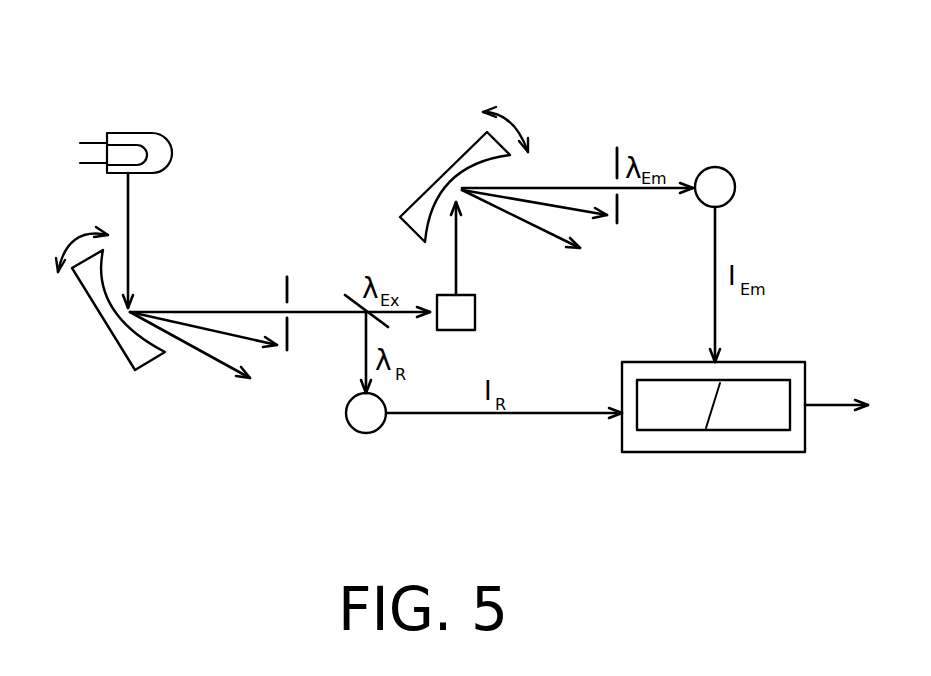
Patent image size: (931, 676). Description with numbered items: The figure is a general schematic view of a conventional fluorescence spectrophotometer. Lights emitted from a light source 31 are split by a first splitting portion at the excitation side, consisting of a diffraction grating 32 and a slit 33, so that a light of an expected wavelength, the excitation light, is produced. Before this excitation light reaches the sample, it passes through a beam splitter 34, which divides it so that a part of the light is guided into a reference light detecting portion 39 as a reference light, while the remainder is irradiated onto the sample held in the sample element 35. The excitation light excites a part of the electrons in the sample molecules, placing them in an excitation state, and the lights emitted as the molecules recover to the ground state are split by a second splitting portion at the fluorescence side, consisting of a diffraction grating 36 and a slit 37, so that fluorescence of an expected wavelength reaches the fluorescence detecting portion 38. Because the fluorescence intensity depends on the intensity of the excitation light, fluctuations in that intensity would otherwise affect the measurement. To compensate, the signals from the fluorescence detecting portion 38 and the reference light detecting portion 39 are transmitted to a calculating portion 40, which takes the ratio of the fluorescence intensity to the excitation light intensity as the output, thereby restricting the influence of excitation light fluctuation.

The light source 31 is at (127, 132).
The diffraction grating 32 is at (120, 348).
The slit 33 is at (287, 277).
The beam splitter 34 is at (352, 296).
The sample element 35 is at (475, 323).
The diffraction grating 36 is at (443, 175).
The slit 37 is at (617, 148).
The fluorescence detecting portion 38 is at (715, 167).
The reference light detecting portion 39 is at (366, 433).
The calculating portion 40 is at (750, 361).